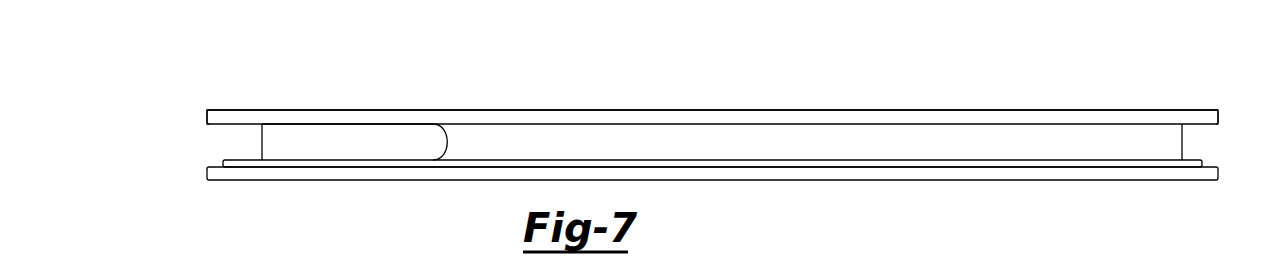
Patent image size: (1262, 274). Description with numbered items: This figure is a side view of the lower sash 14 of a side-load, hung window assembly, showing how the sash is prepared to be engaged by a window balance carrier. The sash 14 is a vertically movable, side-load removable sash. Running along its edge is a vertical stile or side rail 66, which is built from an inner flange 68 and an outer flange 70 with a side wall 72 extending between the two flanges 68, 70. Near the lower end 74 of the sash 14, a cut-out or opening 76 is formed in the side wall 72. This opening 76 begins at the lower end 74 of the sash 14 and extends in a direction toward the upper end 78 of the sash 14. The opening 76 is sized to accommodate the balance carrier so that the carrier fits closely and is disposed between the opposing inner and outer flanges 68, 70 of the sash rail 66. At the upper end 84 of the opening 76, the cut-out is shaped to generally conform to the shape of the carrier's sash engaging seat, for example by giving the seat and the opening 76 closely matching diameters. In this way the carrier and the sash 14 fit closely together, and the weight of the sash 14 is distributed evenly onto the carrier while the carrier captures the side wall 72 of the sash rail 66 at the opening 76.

The lower sash 14 is at (697, 122).
The side rail 66 is at (744, 123).
The inner flange 68 is at (931, 118).
The outer flange 70 is at (773, 168).
The side wall 72 is at (1050, 145).
The lower end 74 is at (205, 114).
The opening 76 is at (357, 122).
The upper end 78 is at (1220, 115).
The upper end of the opening 84 is at (447, 132).